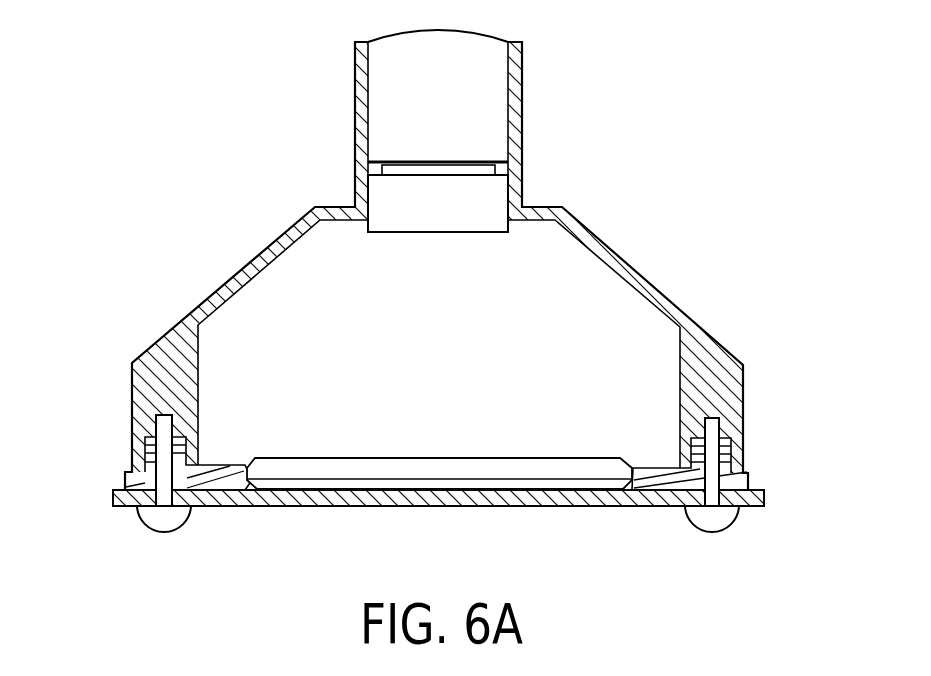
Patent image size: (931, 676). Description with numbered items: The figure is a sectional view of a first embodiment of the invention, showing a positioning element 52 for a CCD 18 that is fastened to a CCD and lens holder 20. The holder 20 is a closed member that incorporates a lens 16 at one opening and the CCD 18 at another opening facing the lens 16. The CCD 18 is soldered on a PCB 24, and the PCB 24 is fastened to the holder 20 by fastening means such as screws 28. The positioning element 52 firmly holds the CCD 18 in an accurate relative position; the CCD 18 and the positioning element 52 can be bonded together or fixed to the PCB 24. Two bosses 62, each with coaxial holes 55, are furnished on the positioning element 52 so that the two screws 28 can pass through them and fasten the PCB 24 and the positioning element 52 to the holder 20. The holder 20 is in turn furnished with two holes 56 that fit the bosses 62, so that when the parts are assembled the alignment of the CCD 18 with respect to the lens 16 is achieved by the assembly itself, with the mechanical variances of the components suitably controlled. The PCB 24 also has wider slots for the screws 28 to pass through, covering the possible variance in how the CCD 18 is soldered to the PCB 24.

The lens 16 is at (492, 69).
The CCD and lens holder 20 is at (642, 278).
The CCD 18 is at (393, 482).
The PCB 24 is at (532, 500).
The coaxial holes 55 is at (720, 420).
The holes 56 is at (743, 450).
The positioning element 52 is at (750, 475).
The boss 62 is at (132, 439).
The screws 28 is at (158, 517).